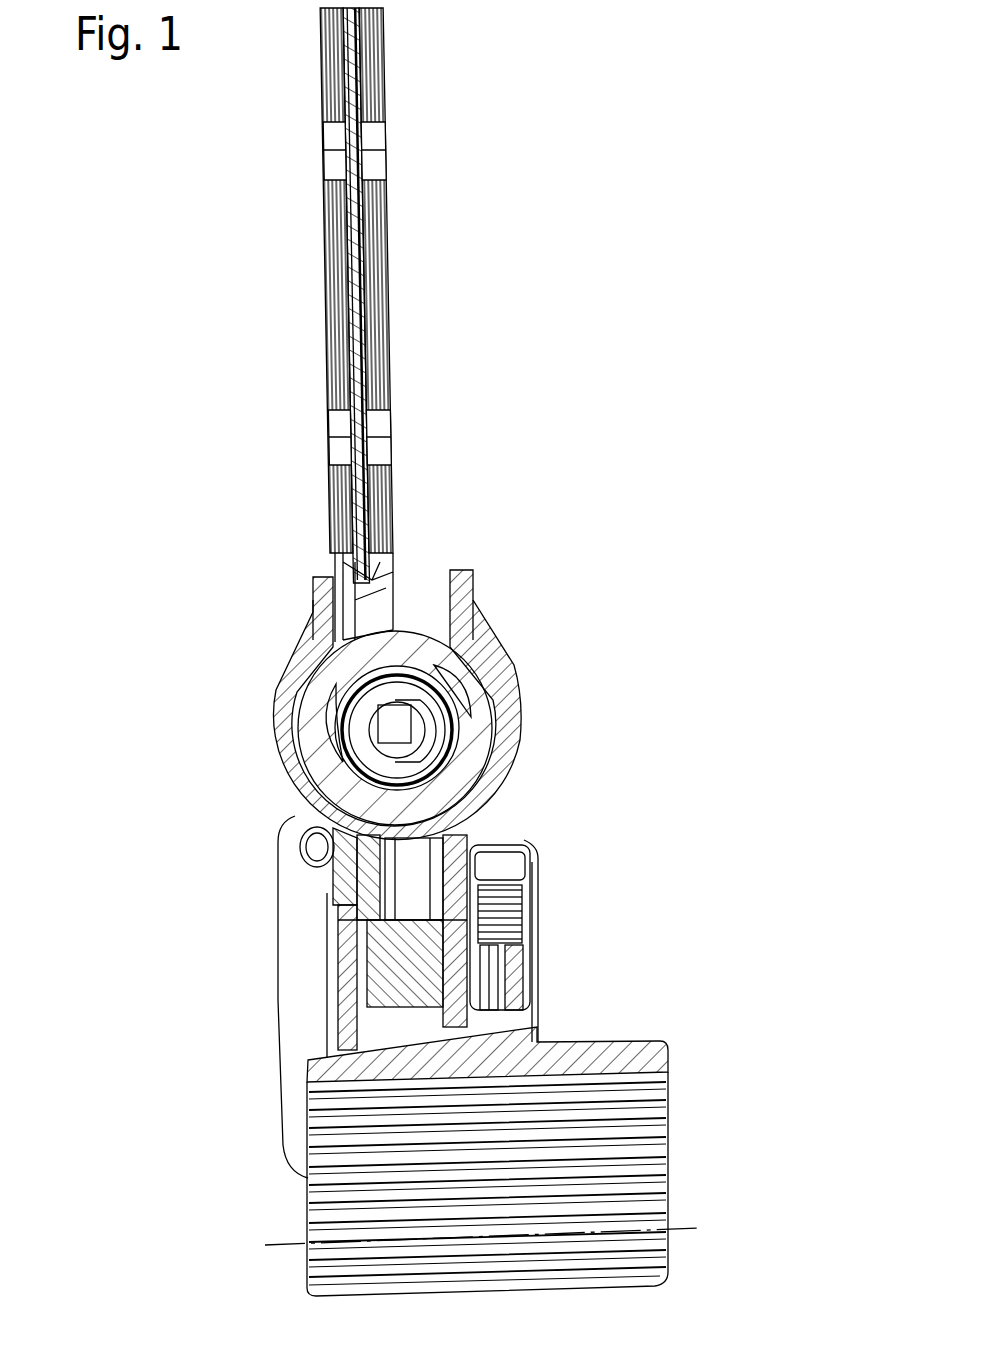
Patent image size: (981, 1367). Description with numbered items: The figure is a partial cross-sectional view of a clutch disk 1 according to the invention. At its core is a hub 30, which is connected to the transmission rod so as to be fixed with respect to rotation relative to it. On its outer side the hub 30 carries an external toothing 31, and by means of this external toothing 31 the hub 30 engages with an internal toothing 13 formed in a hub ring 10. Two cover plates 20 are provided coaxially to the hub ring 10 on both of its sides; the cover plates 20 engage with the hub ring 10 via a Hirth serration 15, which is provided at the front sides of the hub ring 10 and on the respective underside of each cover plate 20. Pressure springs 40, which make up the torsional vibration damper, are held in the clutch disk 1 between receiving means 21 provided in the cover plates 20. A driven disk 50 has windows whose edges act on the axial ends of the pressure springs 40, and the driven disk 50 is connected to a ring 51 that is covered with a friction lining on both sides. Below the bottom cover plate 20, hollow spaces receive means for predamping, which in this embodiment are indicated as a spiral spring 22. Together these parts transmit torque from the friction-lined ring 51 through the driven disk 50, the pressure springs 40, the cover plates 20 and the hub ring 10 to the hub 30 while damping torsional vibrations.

The clutch disk 1 is at (527, 353).
The hub ring 10 is at (495, 982).
The internal toothing 13 is at (360, 993).
The Hirth serration 15 is at (360, 945).
The cover plates 20 is at (473, 581).
The receiving means 21 is at (512, 708).
The spiral spring 22 is at (513, 917).
The hub 30 is at (675, 1160).
The external toothing 31 is at (335, 1062).
The pressure springs 40 is at (417, 655).
The driven disk 50 is at (352, 578).
The ring 51 is at (323, 275).